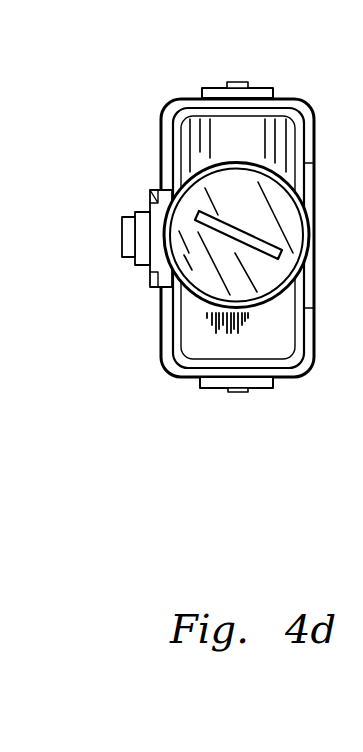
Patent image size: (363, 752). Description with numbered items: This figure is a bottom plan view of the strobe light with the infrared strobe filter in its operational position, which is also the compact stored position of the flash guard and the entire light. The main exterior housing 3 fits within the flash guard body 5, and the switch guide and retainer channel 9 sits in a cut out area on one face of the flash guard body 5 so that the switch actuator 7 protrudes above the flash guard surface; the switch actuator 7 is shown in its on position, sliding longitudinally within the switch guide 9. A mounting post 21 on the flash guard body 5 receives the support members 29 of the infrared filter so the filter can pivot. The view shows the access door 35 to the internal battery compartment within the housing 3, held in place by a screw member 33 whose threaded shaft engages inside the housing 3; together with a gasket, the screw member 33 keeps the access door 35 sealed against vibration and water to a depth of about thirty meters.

The main exterior housing 3 is at (168, 345).
The flash guard body 5 is at (4, 229).
The switch actuator 7 is at (121, 257).
The switch guide and retainer channel 9 is at (150, 190).
The mounting posts 21 is at (237, 393).
The support members 29 is at (201, 88).
The screw member 33 is at (255, 208).
The access door 35 is at (273, 328).